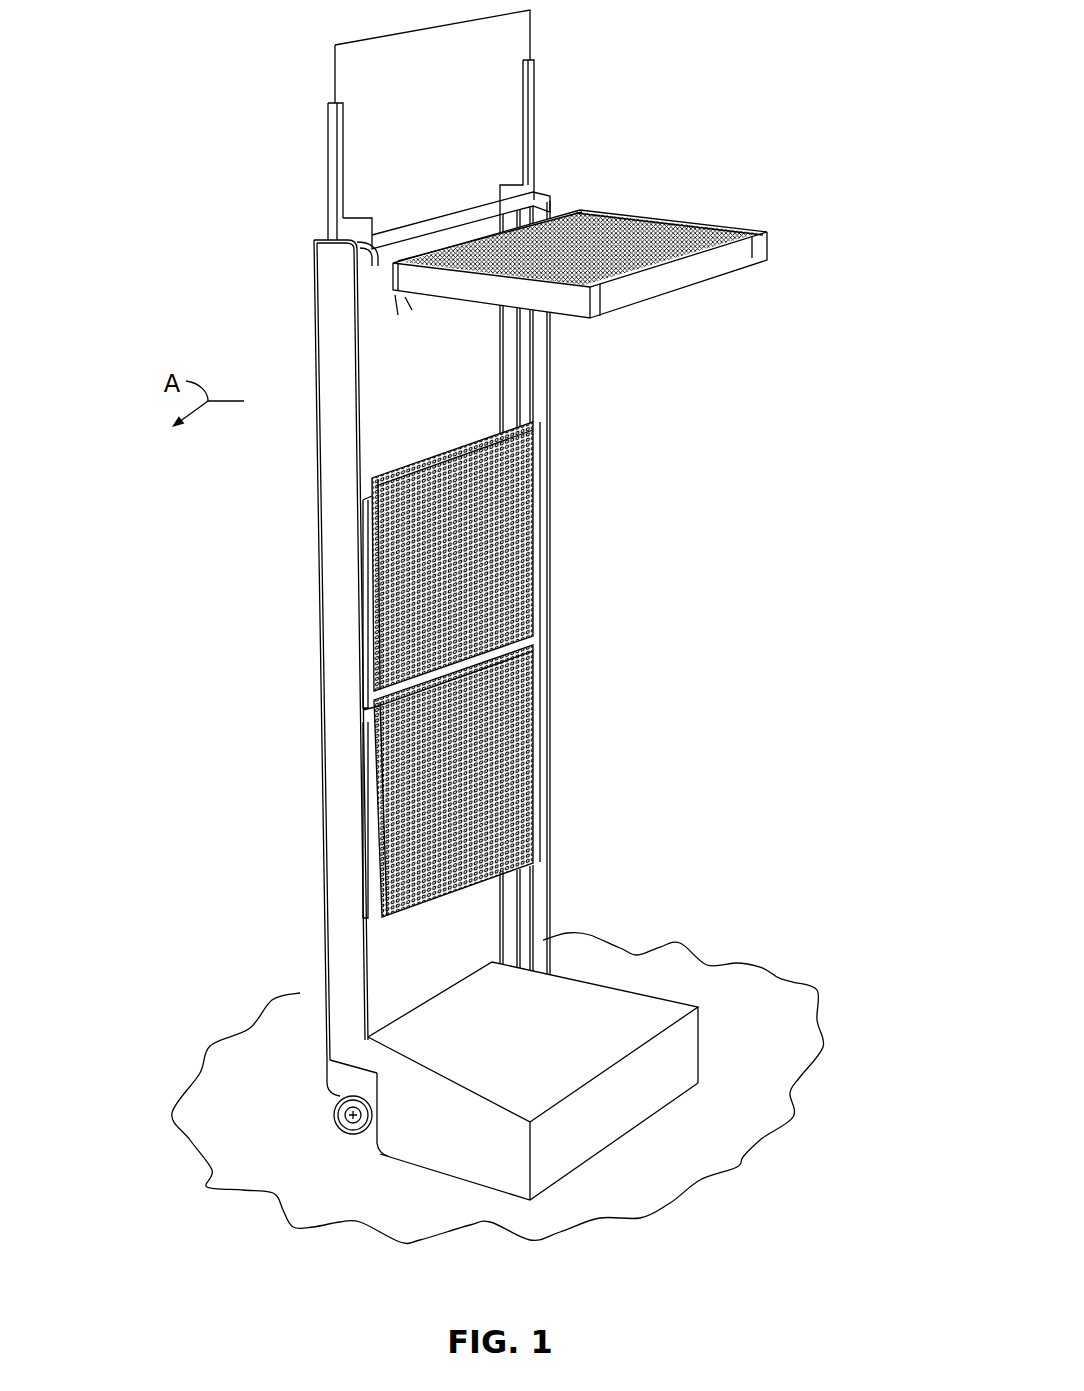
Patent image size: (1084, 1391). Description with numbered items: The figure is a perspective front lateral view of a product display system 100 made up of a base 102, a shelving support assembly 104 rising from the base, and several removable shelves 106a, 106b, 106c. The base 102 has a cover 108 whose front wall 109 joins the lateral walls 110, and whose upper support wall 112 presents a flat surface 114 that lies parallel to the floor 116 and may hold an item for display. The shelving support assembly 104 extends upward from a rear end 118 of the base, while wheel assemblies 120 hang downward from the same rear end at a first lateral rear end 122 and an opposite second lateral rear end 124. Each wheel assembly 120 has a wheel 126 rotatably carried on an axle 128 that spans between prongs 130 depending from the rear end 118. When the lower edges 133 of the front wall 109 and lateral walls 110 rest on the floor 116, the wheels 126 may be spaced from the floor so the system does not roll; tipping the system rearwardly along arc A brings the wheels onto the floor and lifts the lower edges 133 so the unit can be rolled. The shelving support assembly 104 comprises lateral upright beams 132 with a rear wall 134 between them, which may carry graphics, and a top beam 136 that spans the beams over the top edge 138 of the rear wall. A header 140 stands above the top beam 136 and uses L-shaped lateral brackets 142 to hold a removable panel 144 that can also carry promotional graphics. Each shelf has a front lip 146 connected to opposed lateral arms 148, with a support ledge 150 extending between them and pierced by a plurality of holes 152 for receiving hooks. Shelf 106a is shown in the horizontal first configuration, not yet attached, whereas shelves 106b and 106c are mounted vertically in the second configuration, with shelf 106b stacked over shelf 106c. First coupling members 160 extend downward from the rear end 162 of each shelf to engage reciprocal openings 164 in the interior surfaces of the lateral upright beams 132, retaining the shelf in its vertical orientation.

The product display system 100 is at (232, 96).
The base 102 is at (722, 1037).
The shelving support assembly 104 is at (304, 801).
The shelf 106a is at (730, 224).
The shelf 106b is at (545, 541).
The shelf 106c is at (512, 732).
The cover 108 is at (630, 1098).
The front wall 109 is at (680, 1073).
The lateral walls 110 is at (677, 997).
The upper support wall 112 is at (625, 998).
The flat surface 114 is at (592, 992).
The floor 116 is at (763, 1000).
The rear end 118 is at (493, 968).
The wheel assembly 120 is at (340, 1118).
The first lateral rear end 122 is at (310, 1108).
The second lateral rear end 124 is at (547, 965).
The wheel 126 is at (355, 1125).
The axle 128 is at (345, 1120).
The prongs 130 is at (335, 1102).
The lateral upright beams 132 is at (340, 885).
The lower edges 133 is at (505, 1190).
The rear wall 134 is at (470, 400).
The top beam 136 is at (532, 195).
The top edge 138 is at (362, 268).
The header 140 is at (536, 80).
The lateral brackets 142 is at (328, 160).
The panel 144 is at (505, 38).
The front lip 146 is at (690, 277).
The lateral arms 148 is at (678, 225).
The support ledge 150 is at (620, 237).
The holes 152 is at (515, 502).
The first coupling members 160 is at (392, 306).
The rear end 162 is at (433, 258).
The openings 164 is at (530, 370).